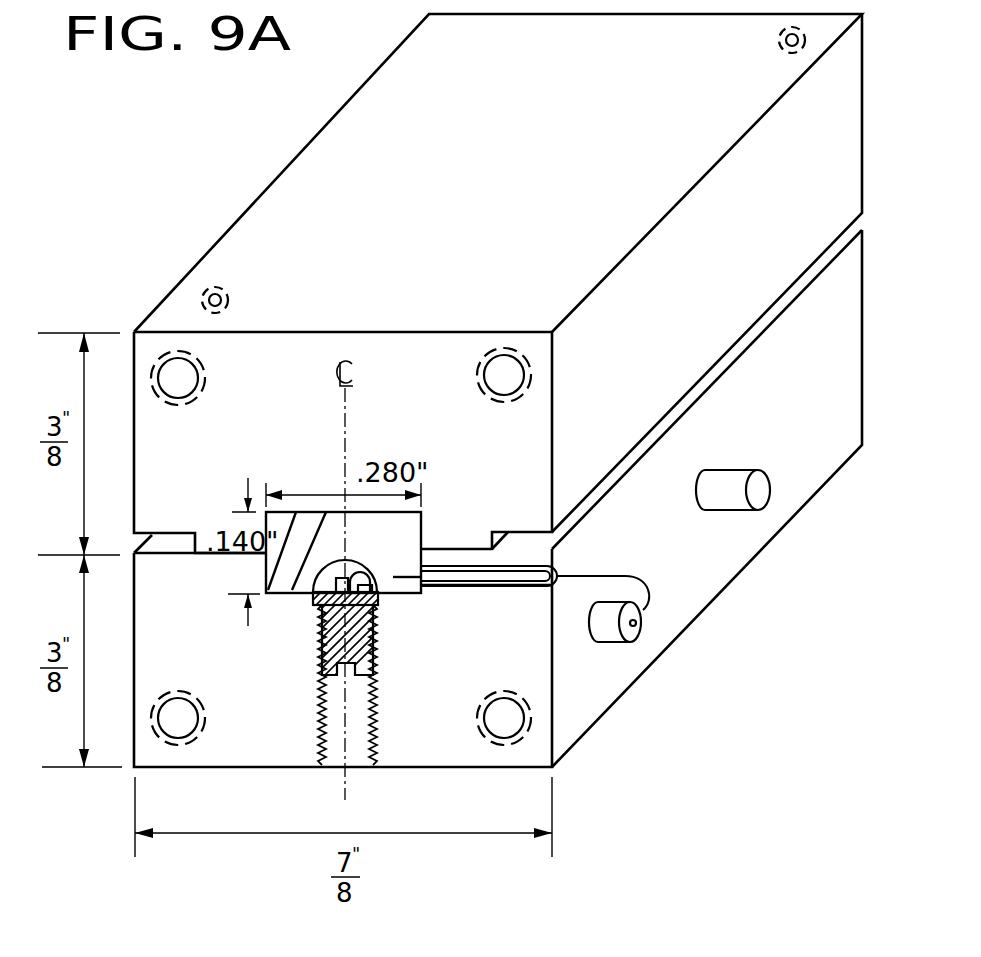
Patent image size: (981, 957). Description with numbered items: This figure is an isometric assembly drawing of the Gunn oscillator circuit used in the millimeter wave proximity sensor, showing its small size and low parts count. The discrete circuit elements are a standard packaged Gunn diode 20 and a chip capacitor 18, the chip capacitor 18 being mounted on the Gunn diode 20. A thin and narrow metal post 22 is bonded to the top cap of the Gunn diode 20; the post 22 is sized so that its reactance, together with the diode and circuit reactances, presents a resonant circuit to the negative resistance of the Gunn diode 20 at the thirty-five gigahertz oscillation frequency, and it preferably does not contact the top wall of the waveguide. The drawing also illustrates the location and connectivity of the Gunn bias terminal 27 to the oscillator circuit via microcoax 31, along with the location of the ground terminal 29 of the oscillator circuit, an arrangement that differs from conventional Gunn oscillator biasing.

The chip capacitor 18 is at (385, 596).
The Gunn diode 20 is at (375, 668).
The metal post 22 is at (313, 592).
The Gunn bias terminal 27 is at (640, 630).
The ground terminal 29 is at (762, 490).
The microcoax 31 is at (495, 590).